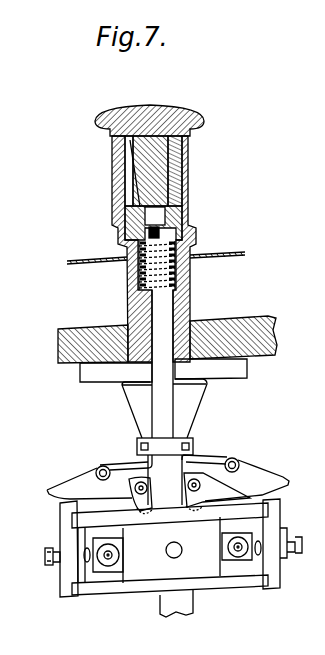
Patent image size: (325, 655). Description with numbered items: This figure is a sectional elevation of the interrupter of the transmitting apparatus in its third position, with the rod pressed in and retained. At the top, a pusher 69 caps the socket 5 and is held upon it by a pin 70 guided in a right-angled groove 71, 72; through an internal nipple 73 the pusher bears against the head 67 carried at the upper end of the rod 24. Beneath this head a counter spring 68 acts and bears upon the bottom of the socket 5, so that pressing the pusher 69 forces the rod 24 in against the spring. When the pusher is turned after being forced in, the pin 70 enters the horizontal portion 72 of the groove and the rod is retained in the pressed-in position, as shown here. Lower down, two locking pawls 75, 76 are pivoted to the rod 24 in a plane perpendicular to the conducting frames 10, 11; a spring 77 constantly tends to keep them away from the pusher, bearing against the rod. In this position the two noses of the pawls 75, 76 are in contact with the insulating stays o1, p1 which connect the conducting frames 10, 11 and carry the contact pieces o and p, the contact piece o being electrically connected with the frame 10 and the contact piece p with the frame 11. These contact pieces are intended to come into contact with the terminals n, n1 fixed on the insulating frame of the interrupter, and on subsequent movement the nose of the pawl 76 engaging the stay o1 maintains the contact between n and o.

The pusher 69 is at (163, 118).
The internal nipple 73 is at (176, 152).
The groove 71 is at (180, 163).
The pin 70 is at (163, 180).
The head 67 is at (184, 208).
The horizontal portion of groove 72 is at (116, 200).
The socket 5 is at (148, 232).
The counter spring 68 is at (179, 272).
The rod 24 is at (168, 421).
The locking pawl 75 is at (92, 489).
The spring 77 is at (115, 465).
The locking pawl 76 is at (215, 483).
The conducting frame 10 is at (240, 508).
The insulating stay p1 is at (65, 513).
The insulating stay o1 is at (268, 527).
The terminal n1 is at (112, 563).
The terminal n is at (242, 560).
The contact piece p is at (83, 560).
The contact piece o is at (262, 548).
The conducting frame 11 is at (207, 580).